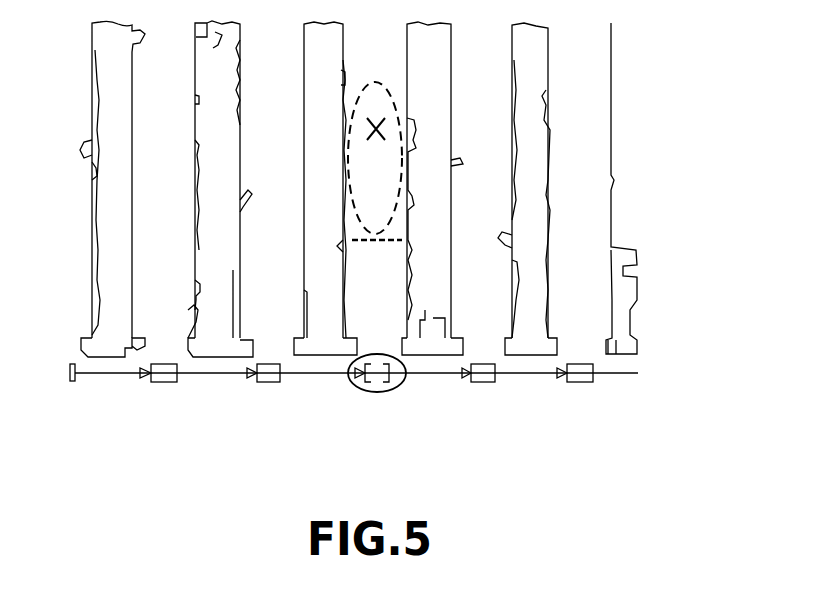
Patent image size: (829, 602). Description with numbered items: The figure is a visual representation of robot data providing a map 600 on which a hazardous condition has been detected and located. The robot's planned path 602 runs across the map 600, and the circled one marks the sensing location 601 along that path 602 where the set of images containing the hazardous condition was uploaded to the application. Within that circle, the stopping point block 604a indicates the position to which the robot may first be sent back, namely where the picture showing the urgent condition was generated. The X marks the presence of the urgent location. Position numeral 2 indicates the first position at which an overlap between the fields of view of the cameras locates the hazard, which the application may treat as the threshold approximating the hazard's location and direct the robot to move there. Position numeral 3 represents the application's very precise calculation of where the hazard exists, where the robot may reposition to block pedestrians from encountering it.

The map 600 is at (692, 104).
The sensing location 601 is at (394, 390).
The planned path 602 is at (530, 364).
The stopping point block 604a is at (357, 385).
The position numeral 3 is at (375, 158).
The position numeral 2 is at (377, 257).